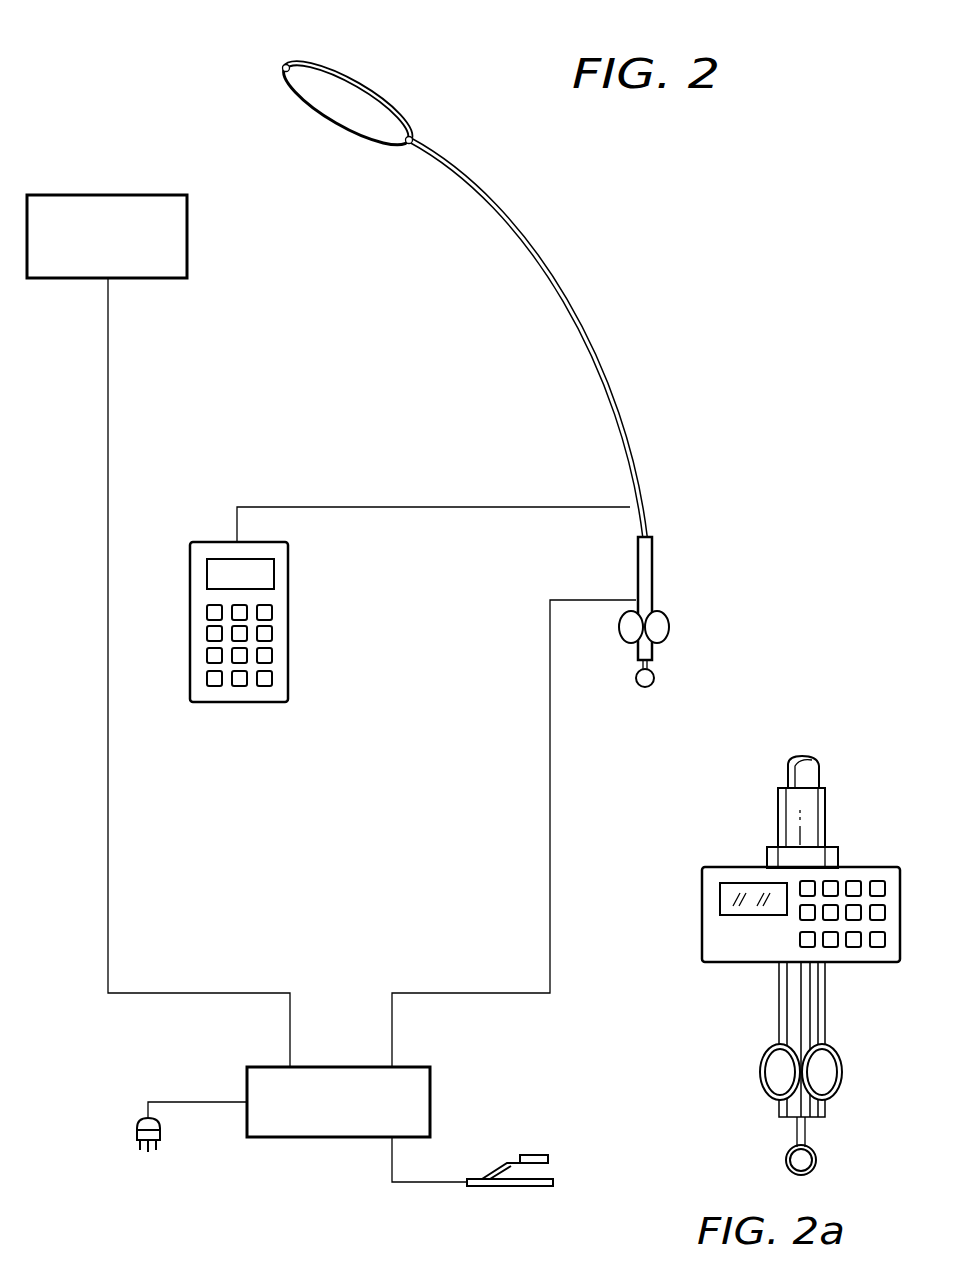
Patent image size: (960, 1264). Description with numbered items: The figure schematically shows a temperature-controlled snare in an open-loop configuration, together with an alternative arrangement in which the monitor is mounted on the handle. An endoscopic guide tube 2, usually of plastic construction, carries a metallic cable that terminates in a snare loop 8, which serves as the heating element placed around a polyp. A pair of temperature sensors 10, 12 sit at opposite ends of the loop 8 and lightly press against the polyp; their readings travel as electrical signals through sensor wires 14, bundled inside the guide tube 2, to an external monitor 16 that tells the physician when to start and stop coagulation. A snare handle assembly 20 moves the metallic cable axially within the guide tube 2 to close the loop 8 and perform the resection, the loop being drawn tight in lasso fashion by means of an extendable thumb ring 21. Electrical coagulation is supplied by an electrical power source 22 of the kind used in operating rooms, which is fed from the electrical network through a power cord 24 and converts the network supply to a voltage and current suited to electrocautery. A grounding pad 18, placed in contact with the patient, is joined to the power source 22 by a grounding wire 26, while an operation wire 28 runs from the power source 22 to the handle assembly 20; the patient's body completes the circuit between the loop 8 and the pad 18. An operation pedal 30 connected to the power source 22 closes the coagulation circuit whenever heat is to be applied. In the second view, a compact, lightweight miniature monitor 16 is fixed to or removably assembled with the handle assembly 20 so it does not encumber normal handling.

In FIG. 2, the endoscopic guide tube 2 is at (573, 320).
In FIG. 2a, the endoscopic guide tube 2 is at (790, 770).
In FIG. 2, the snare loop 8 is at (330, 125).
In FIG. 2, the temperature sensor 10 is at (290, 66).
In FIG. 2, the temperature sensor 12 is at (410, 147).
In FIG. 2, the sensor wires 14 is at (368, 92).
In FIG. 2, the external monitor 16 is at (208, 540).
In FIG. 2a, the external monitor 16 is at (701, 910).
In FIG. 2, the grounding pad 18 is at (188, 250).
In FIG. 2, the snare handle assembly 20 is at (653, 568).
In FIG. 2a, the snare handle assembly 20 is at (826, 800).
In FIG. 2a, the extendable thumb ring 21 is at (812, 1158).
In FIG. 2, the electrical power source 22 is at (430, 1066).
In FIG. 2, the power cord 24 is at (148, 1102).
In FIG. 2, the grounding wire 26 is at (106, 562).
In FIG. 2, the operation wire 28 is at (553, 802).
In FIG. 2, the operation pedal 30 is at (555, 1182).